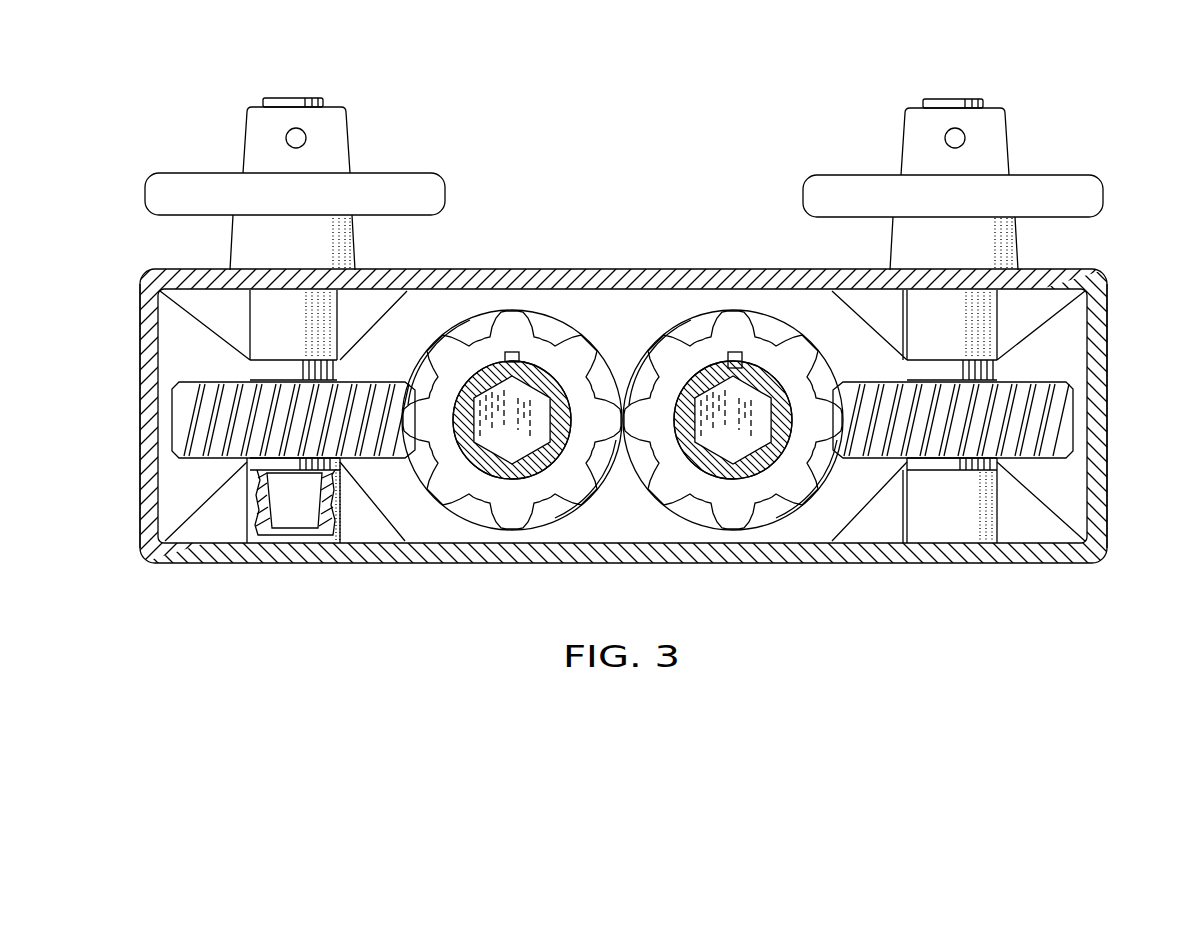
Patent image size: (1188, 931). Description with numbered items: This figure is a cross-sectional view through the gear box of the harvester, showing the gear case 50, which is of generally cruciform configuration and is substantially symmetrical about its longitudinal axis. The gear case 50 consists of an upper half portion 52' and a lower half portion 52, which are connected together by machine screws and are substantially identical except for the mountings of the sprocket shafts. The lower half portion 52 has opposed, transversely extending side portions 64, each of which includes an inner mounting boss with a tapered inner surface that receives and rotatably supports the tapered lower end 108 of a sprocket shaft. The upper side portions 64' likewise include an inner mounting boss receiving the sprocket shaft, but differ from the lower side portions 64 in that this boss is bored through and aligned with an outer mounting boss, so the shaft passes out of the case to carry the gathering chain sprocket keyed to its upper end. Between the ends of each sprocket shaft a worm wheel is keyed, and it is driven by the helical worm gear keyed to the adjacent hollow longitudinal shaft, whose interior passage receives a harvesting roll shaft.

The gear case 50 is at (645, 272).
The lower half portion of gear case 52 is at (1141, 481).
The upper half portion of gear case 52' is at (1143, 349).
The lower side portion of gear case 64 is at (109, 481).
The upper side portion of gear case 64' is at (111, 349).
The tapered lower end of sprocket shaft 108 is at (287, 517).